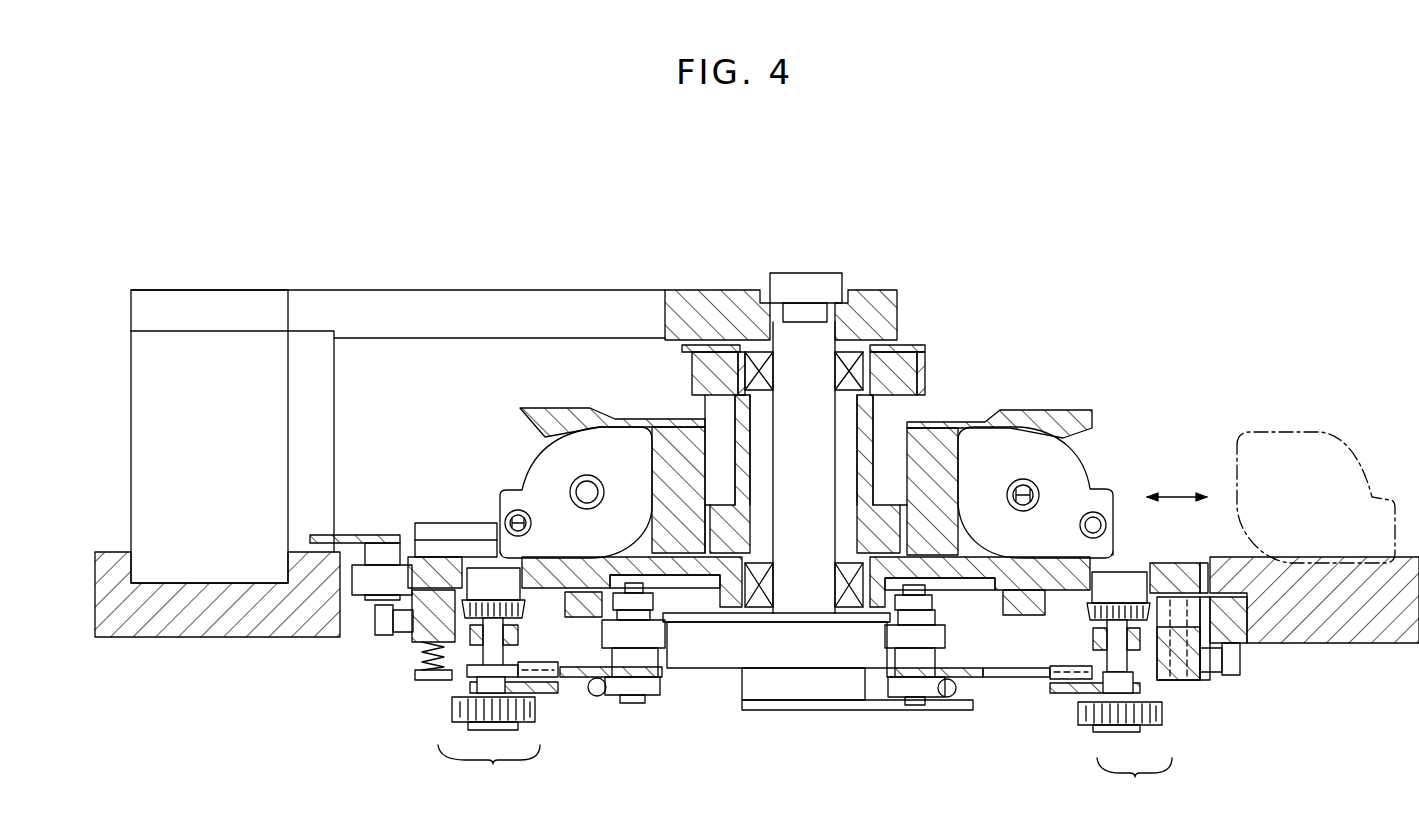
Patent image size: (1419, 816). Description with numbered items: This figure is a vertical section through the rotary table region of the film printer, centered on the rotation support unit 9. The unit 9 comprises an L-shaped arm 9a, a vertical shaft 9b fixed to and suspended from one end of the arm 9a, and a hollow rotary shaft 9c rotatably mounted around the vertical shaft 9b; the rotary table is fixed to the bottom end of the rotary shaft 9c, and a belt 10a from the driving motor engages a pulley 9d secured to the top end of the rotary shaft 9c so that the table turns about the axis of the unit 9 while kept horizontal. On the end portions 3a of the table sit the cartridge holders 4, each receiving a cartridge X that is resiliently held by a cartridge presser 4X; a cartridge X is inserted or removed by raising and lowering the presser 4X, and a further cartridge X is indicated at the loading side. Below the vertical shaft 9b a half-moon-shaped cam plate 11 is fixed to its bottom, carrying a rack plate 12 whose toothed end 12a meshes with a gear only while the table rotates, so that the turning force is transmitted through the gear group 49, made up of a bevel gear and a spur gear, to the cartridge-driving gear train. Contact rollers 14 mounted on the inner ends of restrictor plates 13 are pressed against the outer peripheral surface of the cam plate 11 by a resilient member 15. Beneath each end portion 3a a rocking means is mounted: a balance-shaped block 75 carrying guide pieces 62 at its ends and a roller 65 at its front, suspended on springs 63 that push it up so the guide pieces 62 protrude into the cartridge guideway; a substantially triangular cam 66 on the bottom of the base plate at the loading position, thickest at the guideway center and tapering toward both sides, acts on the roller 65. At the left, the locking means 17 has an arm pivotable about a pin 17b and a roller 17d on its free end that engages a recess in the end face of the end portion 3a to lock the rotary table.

The rotation support unit 9 is at (743, 267).
The L-shaped arm 9a is at (582, 302).
The vertical shaft 9b is at (805, 285).
The hollow rotary shaft 9c is at (890, 418).
The pulley 9d is at (905, 345).
The belt 10a is at (925, 360).
The cartridge holder 4 is at (682, 418).
The cartridge presser 4X is at (1070, 417).
The cartridge X is at (543, 473).
The locking means 17 is at (343, 530).
The pin 17b is at (367, 528).
The roller 17d is at (390, 577).
The guide piece 62 is at (460, 528).
The roller 65 is at (383, 637).
The spring 63 is at (420, 657).
The cam 66 is at (1245, 625).
The balance-shaped block 75 is at (1187, 680).
The end portion 3a is at (1177, 575).
The gear group 49 is at (805, 688).
The contact roller 14 is at (640, 640).
The restrictor plate 13 is at (583, 675).
The resilient member 15 is at (596, 697).
The cam plate 11 is at (717, 657).
The rack plate 12 is at (797, 705).
The toothed end 12a is at (975, 710).